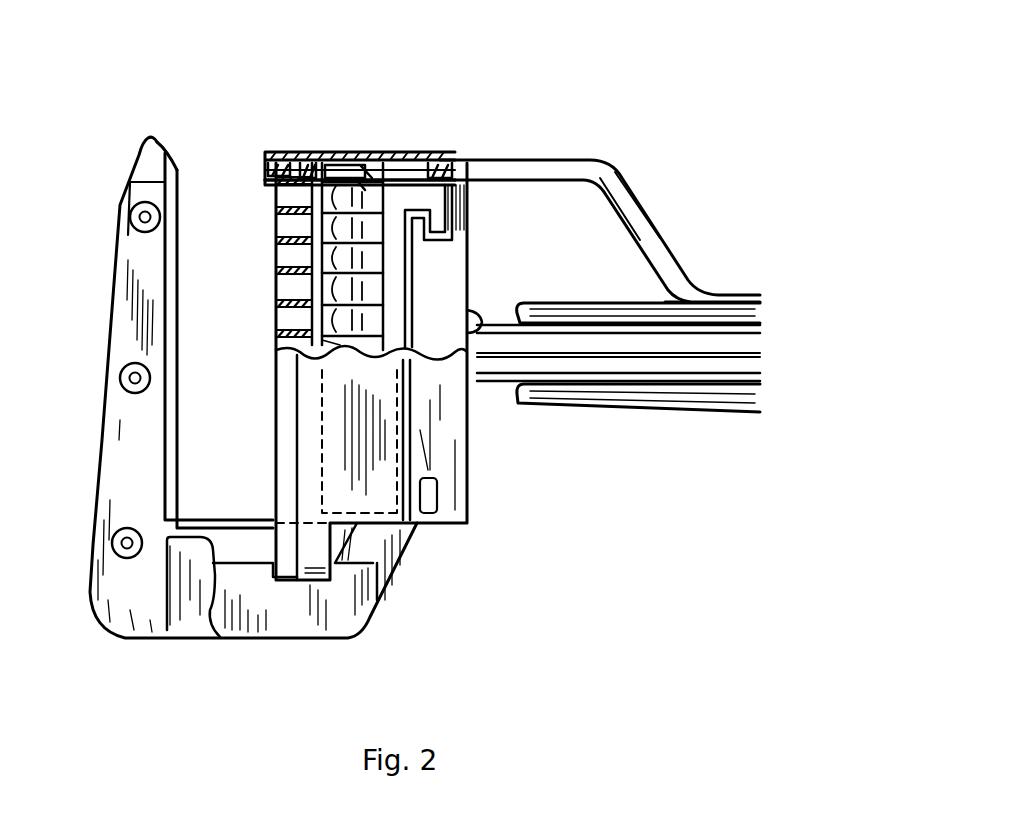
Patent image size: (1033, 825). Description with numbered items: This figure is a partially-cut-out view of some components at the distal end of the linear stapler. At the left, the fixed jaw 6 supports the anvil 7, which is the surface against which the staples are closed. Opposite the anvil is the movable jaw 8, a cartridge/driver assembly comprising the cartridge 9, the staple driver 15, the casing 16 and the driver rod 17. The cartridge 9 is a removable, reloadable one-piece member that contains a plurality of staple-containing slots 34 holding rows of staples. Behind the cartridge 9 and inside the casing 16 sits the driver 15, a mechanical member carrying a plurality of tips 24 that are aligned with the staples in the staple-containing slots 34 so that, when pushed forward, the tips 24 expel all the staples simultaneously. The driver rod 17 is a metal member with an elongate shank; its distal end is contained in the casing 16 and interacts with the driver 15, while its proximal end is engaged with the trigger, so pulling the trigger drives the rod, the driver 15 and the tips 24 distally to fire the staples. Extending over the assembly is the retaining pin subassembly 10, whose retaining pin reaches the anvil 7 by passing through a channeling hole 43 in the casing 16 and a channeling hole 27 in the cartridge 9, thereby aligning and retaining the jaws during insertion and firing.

The fixed jaw 6 is at (120, 207).
The anvil 7 is at (176, 167).
The movable jaw 8 is at (398, 150).
The cartridge 9 is at (284, 153).
The retaining pin subassembly 10 is at (647, 233).
The driver 15 is at (365, 157).
The casing 16 is at (463, 460).
The driver rod 17 is at (473, 313).
The tips 24 is at (273, 320).
The channeling hole 27 is at (307, 153).
The staple-containing slots 34 is at (280, 223).
The channeling hole 43 is at (440, 152).